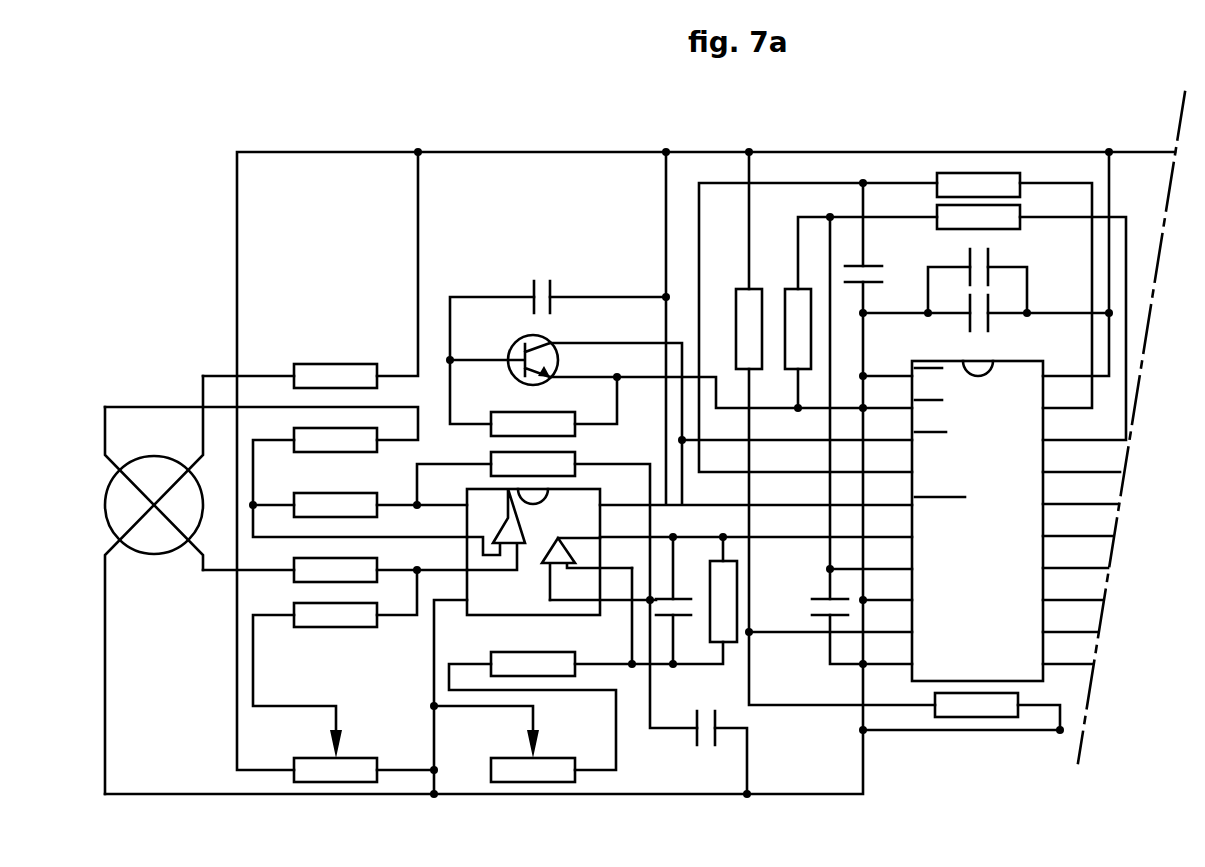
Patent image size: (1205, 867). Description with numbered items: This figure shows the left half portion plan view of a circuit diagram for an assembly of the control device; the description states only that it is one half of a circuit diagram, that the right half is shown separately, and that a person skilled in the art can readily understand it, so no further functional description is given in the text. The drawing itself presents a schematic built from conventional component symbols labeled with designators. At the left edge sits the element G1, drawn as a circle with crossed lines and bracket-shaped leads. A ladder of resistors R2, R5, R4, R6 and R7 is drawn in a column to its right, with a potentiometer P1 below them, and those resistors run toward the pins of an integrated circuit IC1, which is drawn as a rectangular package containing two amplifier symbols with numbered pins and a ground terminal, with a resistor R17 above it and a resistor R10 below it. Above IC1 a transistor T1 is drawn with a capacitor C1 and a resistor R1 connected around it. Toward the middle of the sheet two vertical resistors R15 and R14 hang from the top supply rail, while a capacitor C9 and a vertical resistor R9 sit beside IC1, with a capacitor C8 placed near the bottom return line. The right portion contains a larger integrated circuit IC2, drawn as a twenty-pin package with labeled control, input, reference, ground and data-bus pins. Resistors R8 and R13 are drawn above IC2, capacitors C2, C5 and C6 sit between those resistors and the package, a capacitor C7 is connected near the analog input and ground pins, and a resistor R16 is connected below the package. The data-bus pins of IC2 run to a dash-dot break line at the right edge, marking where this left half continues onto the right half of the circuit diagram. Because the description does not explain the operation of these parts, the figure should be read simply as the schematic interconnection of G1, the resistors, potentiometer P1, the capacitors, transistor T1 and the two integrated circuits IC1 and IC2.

The sensor bridge / generator G1 is at (131, 585).
The resistor R1 is at (533, 424).
The resistor R2 is at (335, 376).
The resistor R4 is at (335, 505).
The resistor R5 is at (335, 440).
The resistor R6 is at (335, 570).
The resistor R7 is at (335, 615).
The resistor R8 is at (978, 185).
The resistor R9 is at (723, 601).
The resistor R10 is at (533, 664).
The resistor R13 is at (978, 217).
The resistor R14 is at (798, 329).
The resistor R15 is at (749, 329).
The resistor R16 is at (976, 705).
The resistor R17 is at (533, 464).
The potentiometer P1 is at (335, 770).
The capacitor C1 is at (559, 292).
The capacitor C2 is at (872, 262).
The capacitor C5 is at (995, 261).
The capacitor C6 is at (995, 309).
The capacitor C7 is at (819, 594).
The capacitor C8 is at (686, 724).
The capacitor C9 is at (679, 594).
The transistor T1 is at (521, 360).
The operational amplifier IC IC1 is at (532, 562).
The analog-to-digital converter IC IC2 is at (975, 506).